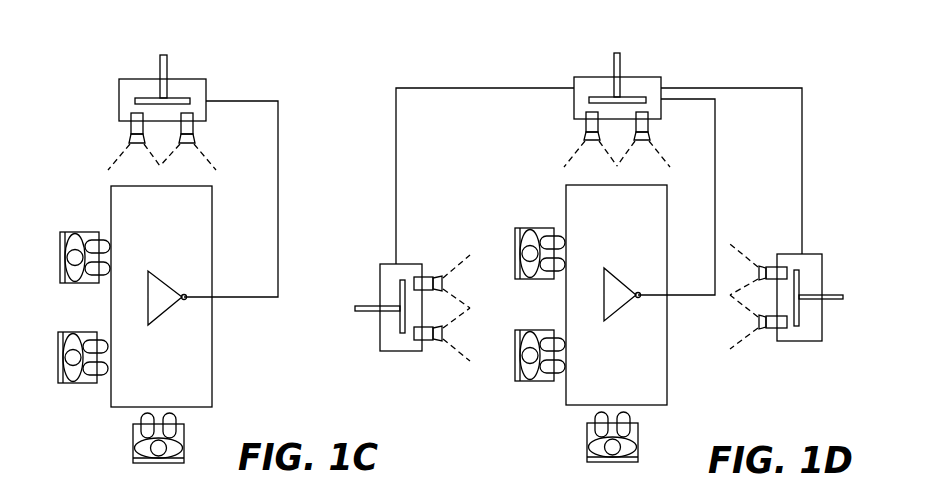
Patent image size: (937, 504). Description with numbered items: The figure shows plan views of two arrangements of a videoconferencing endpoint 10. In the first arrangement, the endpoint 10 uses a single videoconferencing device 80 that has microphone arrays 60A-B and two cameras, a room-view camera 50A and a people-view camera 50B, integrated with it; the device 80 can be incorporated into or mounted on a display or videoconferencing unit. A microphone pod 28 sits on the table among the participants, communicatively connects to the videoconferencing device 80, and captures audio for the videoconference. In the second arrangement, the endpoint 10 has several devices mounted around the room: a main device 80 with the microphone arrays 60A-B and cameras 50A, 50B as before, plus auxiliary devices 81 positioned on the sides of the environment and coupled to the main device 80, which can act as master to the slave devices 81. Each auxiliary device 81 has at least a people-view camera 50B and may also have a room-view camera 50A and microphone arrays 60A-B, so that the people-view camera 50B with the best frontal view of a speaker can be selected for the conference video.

In FIG. 1C, the endpoint 10 is at (292, 90).
In FIG. 1D, the endpoint 10 is at (748, 54).
In FIG. 1C, the microphone pod 28 is at (161, 313).
In FIG. 1D, the microphone pod 28 is at (617, 312).
In FIG. 1C, the room-view camera 50A is at (130, 126).
In FIG. 1D, the room-view camera 50A is at (585, 124).
In FIG. 1C, the people-view camera 50B is at (195, 126).
In FIG. 1D, the people-view camera 50B is at (650, 124).
In FIG. 1C, the microphone arrays 60A-B is at (168, 60).
In FIG. 1D, the microphone arrays 60A-B is at (622, 60).
In FIG. 1C, the videoconferencing device 80 is at (132, 78).
In FIG. 1D, the videoconferencing device 80 is at (589, 76).
In FIG. 1D, the auxiliary device 81 is at (386, 264).